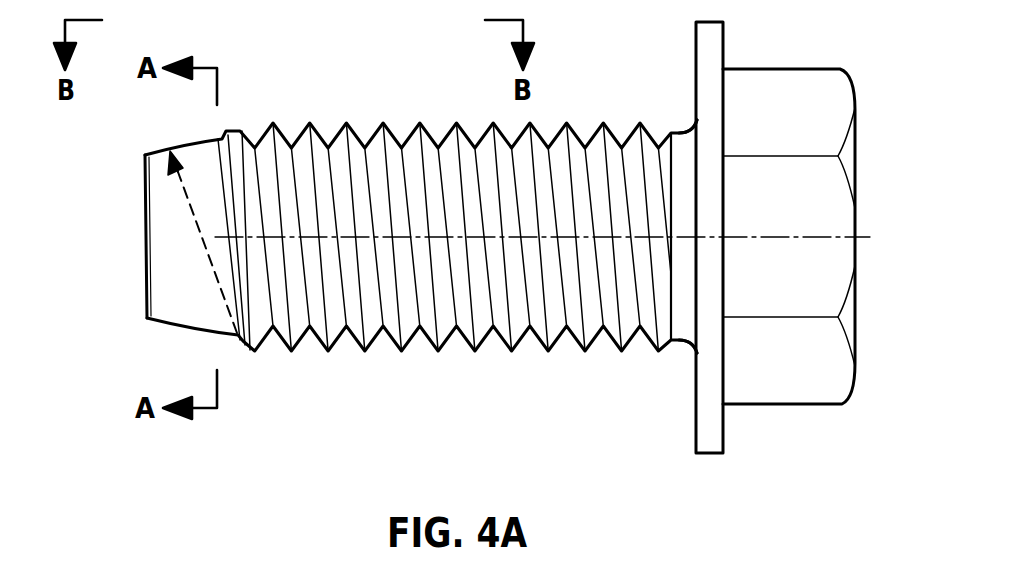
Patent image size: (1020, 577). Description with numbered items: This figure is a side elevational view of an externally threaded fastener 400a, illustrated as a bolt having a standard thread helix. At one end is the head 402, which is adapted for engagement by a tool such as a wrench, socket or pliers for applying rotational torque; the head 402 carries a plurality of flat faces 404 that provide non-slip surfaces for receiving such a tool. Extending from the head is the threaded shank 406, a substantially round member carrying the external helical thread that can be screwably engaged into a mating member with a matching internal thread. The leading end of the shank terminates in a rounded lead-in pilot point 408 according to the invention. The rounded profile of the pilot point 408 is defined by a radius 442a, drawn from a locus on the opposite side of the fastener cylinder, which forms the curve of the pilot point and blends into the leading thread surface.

The externally threaded fastener 400a is at (568, 102).
The head 402 is at (857, 174).
The flat faces 404 is at (770, 88).
The threaded shank 406 is at (677, 343).
The rounded lead-in pilot point 408 is at (168, 323).
The radius 442a is at (194, 242).